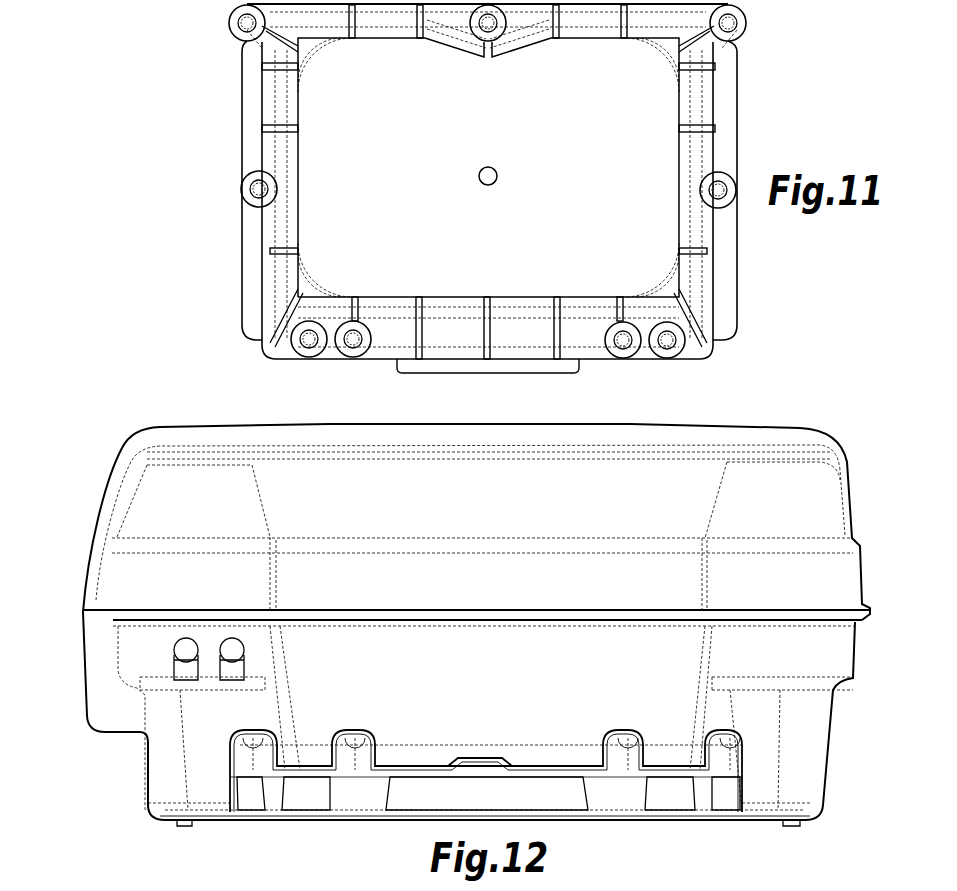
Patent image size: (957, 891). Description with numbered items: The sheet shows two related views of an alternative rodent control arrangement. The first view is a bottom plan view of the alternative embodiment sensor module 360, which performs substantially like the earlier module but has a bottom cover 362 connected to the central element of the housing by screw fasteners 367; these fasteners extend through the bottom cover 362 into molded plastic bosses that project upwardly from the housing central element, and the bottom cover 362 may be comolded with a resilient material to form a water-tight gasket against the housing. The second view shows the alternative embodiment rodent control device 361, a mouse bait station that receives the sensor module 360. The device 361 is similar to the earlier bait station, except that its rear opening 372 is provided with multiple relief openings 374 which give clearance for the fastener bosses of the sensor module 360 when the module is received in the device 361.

In FIG. 11, the sensor module 360 is at (504, 188).
In FIG. 11, the bottom cover 362 is at (738, 106).
In FIG. 11, the screw fasteners 367 is at (259, 190).
In FIG. 12, the rodent control device 361 is at (456, 608).
In FIG. 12, the rear opening 372 is at (527, 780).
In FIG. 12, the relief openings 374 is at (246, 734).